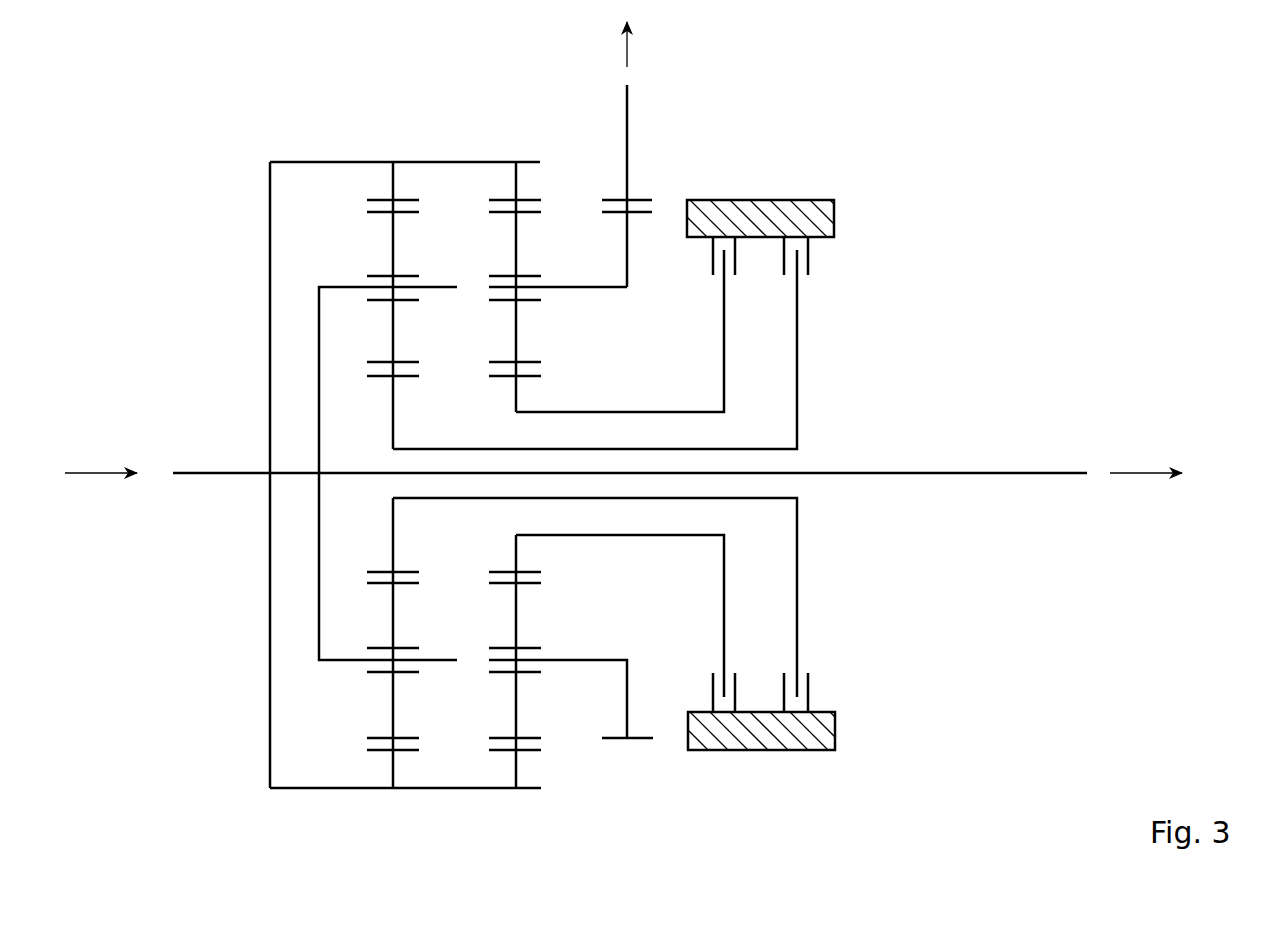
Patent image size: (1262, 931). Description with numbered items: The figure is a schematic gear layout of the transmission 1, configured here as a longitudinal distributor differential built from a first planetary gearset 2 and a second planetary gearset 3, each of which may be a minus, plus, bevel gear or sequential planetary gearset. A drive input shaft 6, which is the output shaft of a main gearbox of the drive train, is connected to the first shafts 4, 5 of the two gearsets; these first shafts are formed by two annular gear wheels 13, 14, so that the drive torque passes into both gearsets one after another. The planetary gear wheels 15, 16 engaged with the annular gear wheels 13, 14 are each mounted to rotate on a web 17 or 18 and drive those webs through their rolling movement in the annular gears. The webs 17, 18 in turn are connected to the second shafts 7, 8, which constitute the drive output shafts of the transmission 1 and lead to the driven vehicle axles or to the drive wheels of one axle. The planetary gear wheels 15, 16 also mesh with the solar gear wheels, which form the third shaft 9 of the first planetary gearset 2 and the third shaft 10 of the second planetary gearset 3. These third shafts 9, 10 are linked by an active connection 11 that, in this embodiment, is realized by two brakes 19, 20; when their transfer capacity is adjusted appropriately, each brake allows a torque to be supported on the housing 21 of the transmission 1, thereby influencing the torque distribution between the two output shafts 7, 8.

The transmission 1 is at (1108, 150).
The first planetary gearset 2 is at (292, 373).
The second planetary gearset 3 is at (540, 703).
The first shaft 4 is at (392, 178).
The first shaft 5 is at (513, 178).
The drive input shaft 6 is at (222, 478).
The second shaft 7 is at (913, 477).
The second shaft 8 is at (630, 252).
The third shaft 9 is at (393, 423).
The third shaft 10 is at (545, 560).
The active connection 11 is at (760, 754).
The annular gear wheel 13 is at (397, 187).
The annular gear wheel 14 is at (519, 187).
The planetary gear wheel 15 is at (393, 243).
The planetary gear wheel 16 is at (516, 243).
The web 17 is at (319, 330).
The web 18 is at (583, 287).
The brake 19 is at (742, 680).
The brake 20 is at (810, 257).
The housing 21 is at (758, 222).